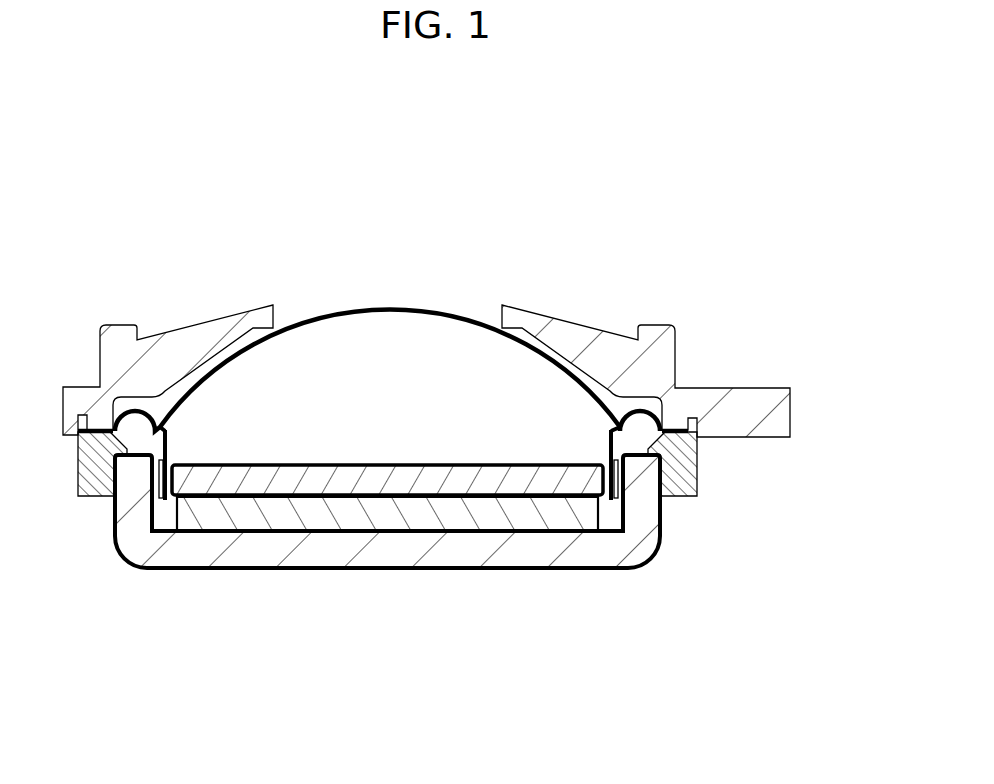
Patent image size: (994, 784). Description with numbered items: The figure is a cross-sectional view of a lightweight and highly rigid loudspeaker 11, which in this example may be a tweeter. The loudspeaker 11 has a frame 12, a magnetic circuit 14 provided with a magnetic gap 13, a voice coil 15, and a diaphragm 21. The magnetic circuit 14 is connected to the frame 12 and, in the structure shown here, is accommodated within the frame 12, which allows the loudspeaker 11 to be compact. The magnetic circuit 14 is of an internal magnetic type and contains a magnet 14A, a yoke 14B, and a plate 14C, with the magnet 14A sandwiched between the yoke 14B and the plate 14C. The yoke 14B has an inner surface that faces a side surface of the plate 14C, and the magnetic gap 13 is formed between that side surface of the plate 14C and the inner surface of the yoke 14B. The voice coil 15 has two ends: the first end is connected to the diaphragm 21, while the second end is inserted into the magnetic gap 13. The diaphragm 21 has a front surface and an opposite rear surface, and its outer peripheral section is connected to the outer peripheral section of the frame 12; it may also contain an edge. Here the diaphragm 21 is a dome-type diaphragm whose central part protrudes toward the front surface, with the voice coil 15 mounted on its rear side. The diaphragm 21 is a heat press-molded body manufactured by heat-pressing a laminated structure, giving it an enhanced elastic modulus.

The loudspeaker 11 is at (700, 220).
The frame 12 is at (685, 462).
The magnetic gap 13 is at (148, 531).
The magnetic circuit 14 is at (387, 586).
The magnet 14A is at (443, 513).
The yoke 14B is at (495, 548).
The plate 14C is at (565, 655).
The voice coil 15 is at (622, 485).
The diaphragm 21 is at (375, 308).